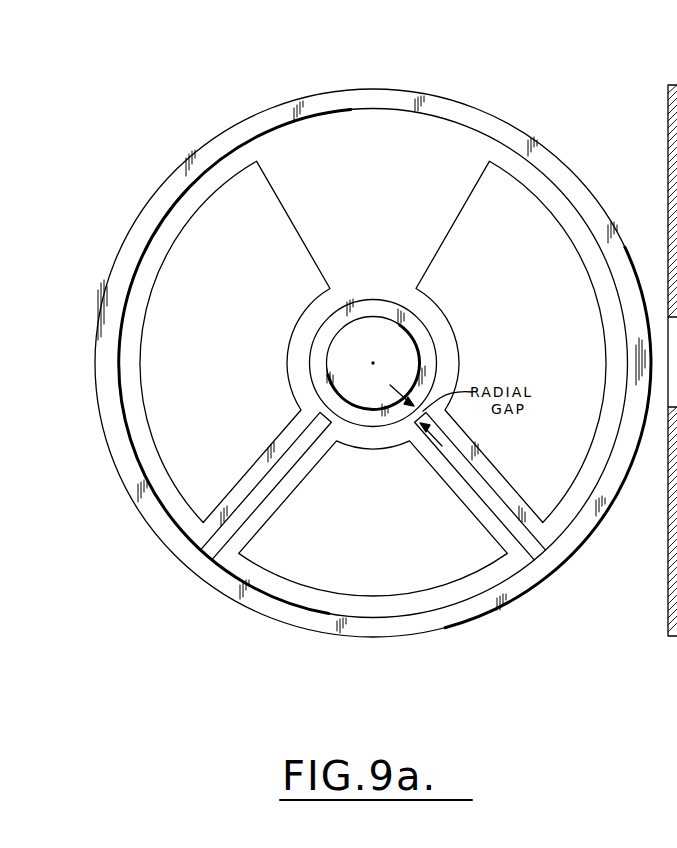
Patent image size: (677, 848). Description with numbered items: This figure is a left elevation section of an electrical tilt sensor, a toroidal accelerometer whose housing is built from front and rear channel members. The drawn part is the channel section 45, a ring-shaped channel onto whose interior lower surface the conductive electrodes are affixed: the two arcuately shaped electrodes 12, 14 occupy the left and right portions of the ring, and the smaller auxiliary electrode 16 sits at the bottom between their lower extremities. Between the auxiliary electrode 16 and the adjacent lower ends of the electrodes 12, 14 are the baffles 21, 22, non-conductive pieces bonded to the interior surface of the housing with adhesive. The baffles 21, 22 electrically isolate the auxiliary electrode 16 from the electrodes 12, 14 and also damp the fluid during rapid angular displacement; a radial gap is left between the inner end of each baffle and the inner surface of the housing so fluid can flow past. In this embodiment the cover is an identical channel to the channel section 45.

The channel section 45 is at (212, 141).
The arcuately shaped electrode 12 is at (218, 375).
The arcuately shaped electrode 14 is at (548, 375).
The auxiliary electrode 16 is at (385, 543).
The baffle 21 is at (211, 553).
The baffle 22 is at (530, 548).